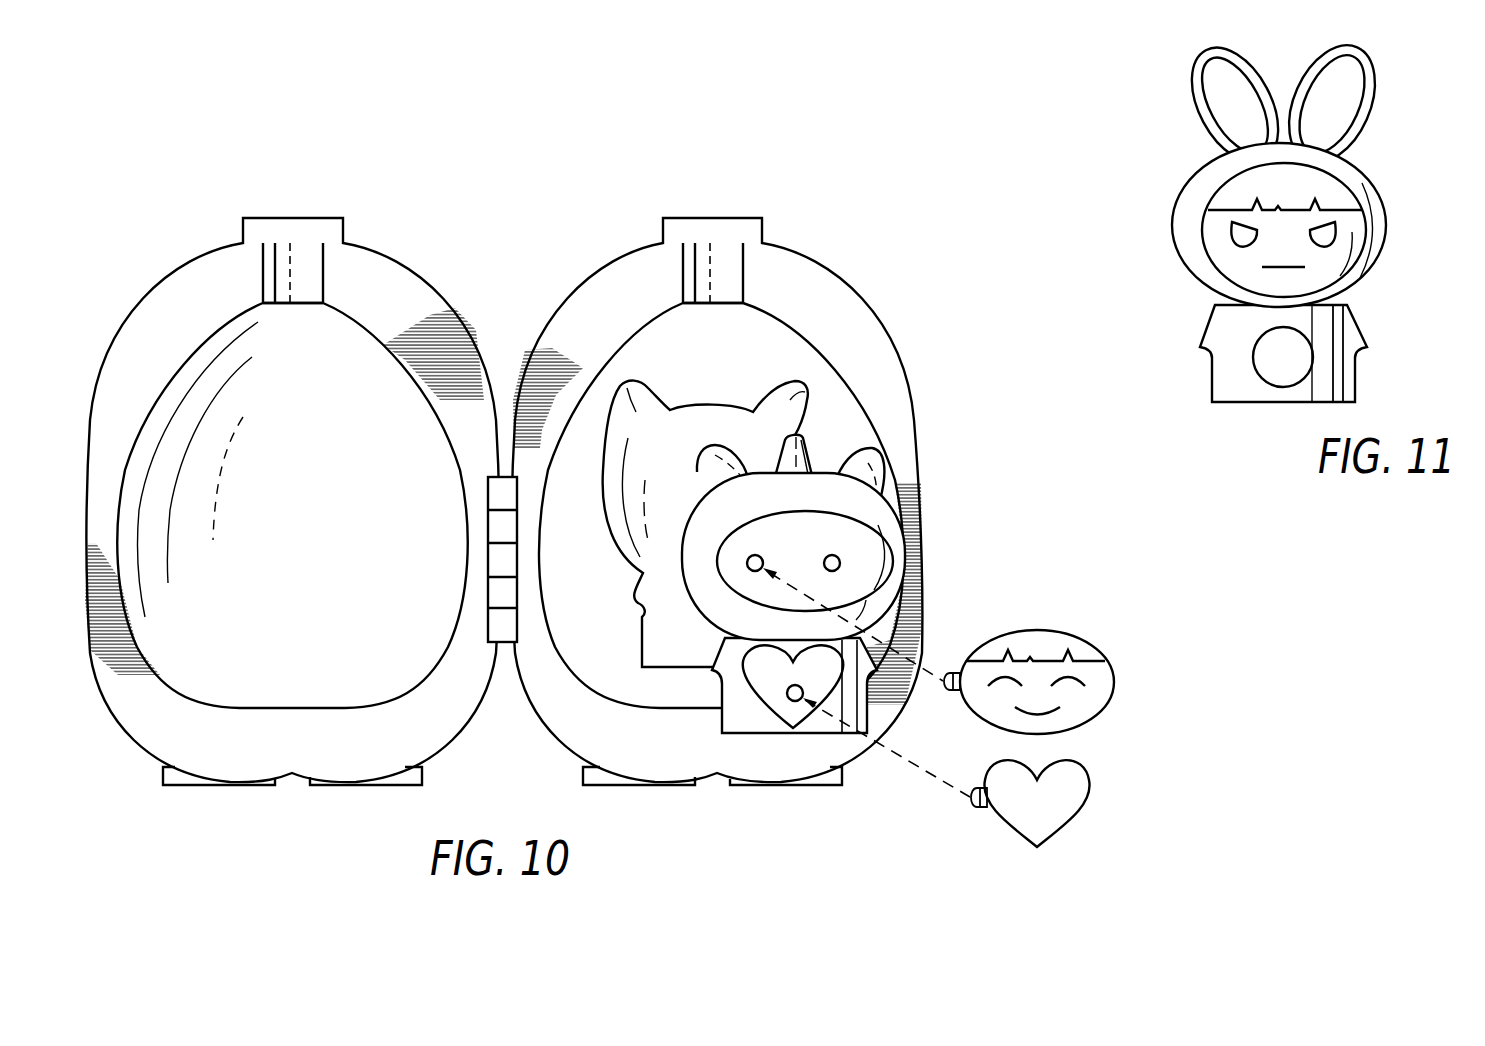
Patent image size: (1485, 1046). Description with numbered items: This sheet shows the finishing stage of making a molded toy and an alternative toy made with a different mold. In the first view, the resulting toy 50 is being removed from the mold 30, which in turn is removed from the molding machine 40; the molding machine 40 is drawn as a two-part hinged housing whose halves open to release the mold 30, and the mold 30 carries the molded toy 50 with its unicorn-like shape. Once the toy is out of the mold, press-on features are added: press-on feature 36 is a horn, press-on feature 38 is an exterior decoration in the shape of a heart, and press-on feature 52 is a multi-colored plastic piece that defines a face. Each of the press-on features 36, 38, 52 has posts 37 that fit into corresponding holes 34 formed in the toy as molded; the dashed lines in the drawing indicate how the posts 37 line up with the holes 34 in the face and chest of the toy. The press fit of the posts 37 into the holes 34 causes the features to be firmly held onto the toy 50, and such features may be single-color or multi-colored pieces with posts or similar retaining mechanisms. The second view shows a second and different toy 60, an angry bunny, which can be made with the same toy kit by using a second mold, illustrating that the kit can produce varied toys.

In FIG. 10, the mold 30 is at (749, 563).
In FIG. 10, the holes 34 is at (764, 559).
In FIG. 10, the press-on feature (horn) 36 is at (812, 450).
In FIG. 10, the posts 37 is at (945, 690).
In FIG. 10, the press-on feature (heart decoration) 38 is at (1053, 798).
In FIG. 10, the molding machine 40 is at (403, 257).
In FIG. 10, the toy figure 50 is at (1055, 731).
In FIG. 10, the press-on feature (face) 52 is at (1053, 636).
In FIG. 11, the second toy figure (angry bunny) 60 is at (1130, 100).